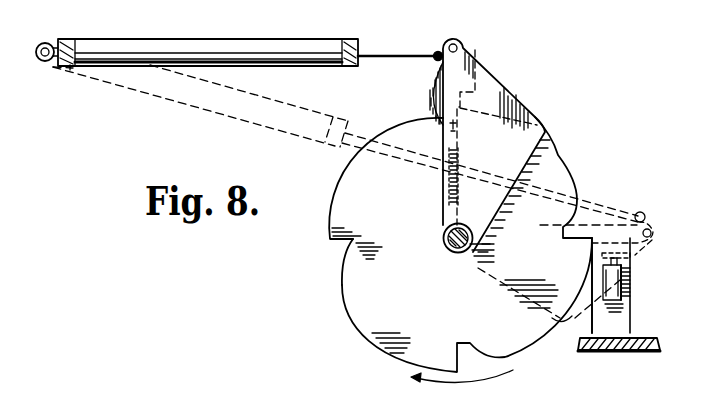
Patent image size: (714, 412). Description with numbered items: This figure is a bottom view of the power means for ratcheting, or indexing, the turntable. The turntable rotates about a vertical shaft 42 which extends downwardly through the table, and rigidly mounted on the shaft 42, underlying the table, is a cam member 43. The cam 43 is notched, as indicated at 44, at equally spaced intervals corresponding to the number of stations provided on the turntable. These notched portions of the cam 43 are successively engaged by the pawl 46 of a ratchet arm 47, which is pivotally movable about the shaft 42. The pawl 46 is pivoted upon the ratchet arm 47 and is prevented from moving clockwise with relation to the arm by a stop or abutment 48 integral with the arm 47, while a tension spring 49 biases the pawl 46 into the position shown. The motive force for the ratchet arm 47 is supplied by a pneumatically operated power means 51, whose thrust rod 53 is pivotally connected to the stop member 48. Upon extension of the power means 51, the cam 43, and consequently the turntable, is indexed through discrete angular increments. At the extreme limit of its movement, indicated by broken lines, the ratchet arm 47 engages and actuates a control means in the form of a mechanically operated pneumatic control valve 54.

The power means 51 is at (186, 33).
The thrust rod 53 is at (393, 56).
The stop or abutment 48 is at (437, 62).
The pawl 46 is at (436, 103).
The ratchet arm 47 is at (538, 126).
The tension spring 49 is at (458, 156).
The cam member 43 is at (362, 182).
The notch 44 is at (348, 242).
The vertical shaft 42 is at (448, 242).
The pneumatic control valve 54 is at (627, 292).